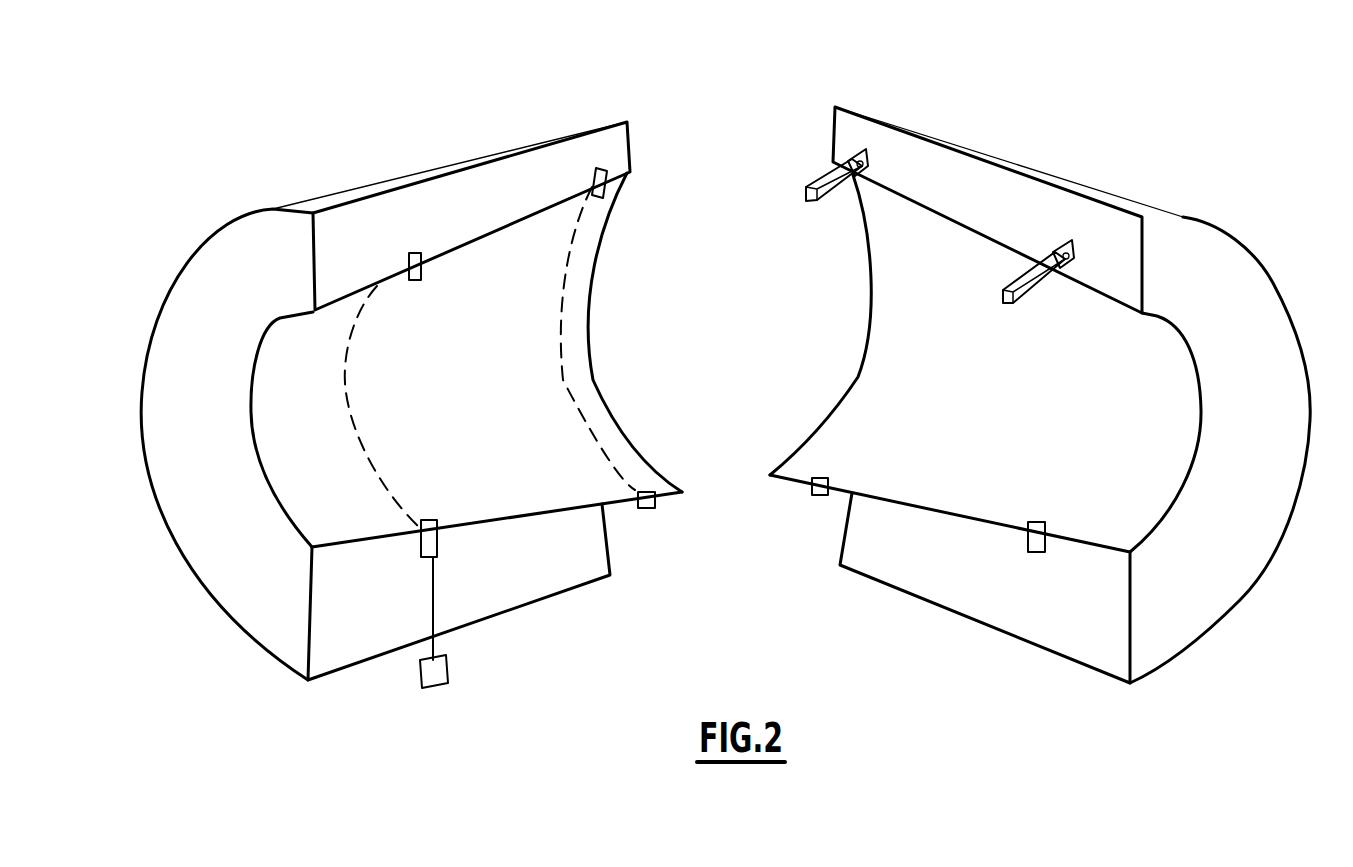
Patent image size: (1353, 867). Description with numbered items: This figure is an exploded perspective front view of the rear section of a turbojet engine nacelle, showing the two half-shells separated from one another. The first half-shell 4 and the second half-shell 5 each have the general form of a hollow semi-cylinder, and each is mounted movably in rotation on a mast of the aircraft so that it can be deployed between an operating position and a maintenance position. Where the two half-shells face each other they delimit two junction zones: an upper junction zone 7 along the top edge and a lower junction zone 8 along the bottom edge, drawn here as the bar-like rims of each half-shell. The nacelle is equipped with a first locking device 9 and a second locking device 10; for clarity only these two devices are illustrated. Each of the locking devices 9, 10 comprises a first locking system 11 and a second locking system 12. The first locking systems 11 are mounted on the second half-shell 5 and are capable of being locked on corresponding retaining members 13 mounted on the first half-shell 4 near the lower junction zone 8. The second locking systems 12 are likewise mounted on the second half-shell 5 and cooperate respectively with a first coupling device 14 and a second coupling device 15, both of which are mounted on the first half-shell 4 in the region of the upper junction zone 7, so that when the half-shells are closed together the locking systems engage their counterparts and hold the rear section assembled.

The first half-shell 4 is at (1242, 317).
The second half-shell 5 is at (220, 310).
The upper junction zone 7 is at (512, 184).
The lower junction zone 8 is at (535, 562).
The first locking device 9 is at (641, 520).
The second locking device 10 is at (410, 676).
The first locking system 11 is at (432, 540).
The second locking system 12 is at (420, 258).
The retaining member 13 is at (816, 497).
The first coupling device 14 is at (832, 185).
The second coupling device 15 is at (1027, 287).